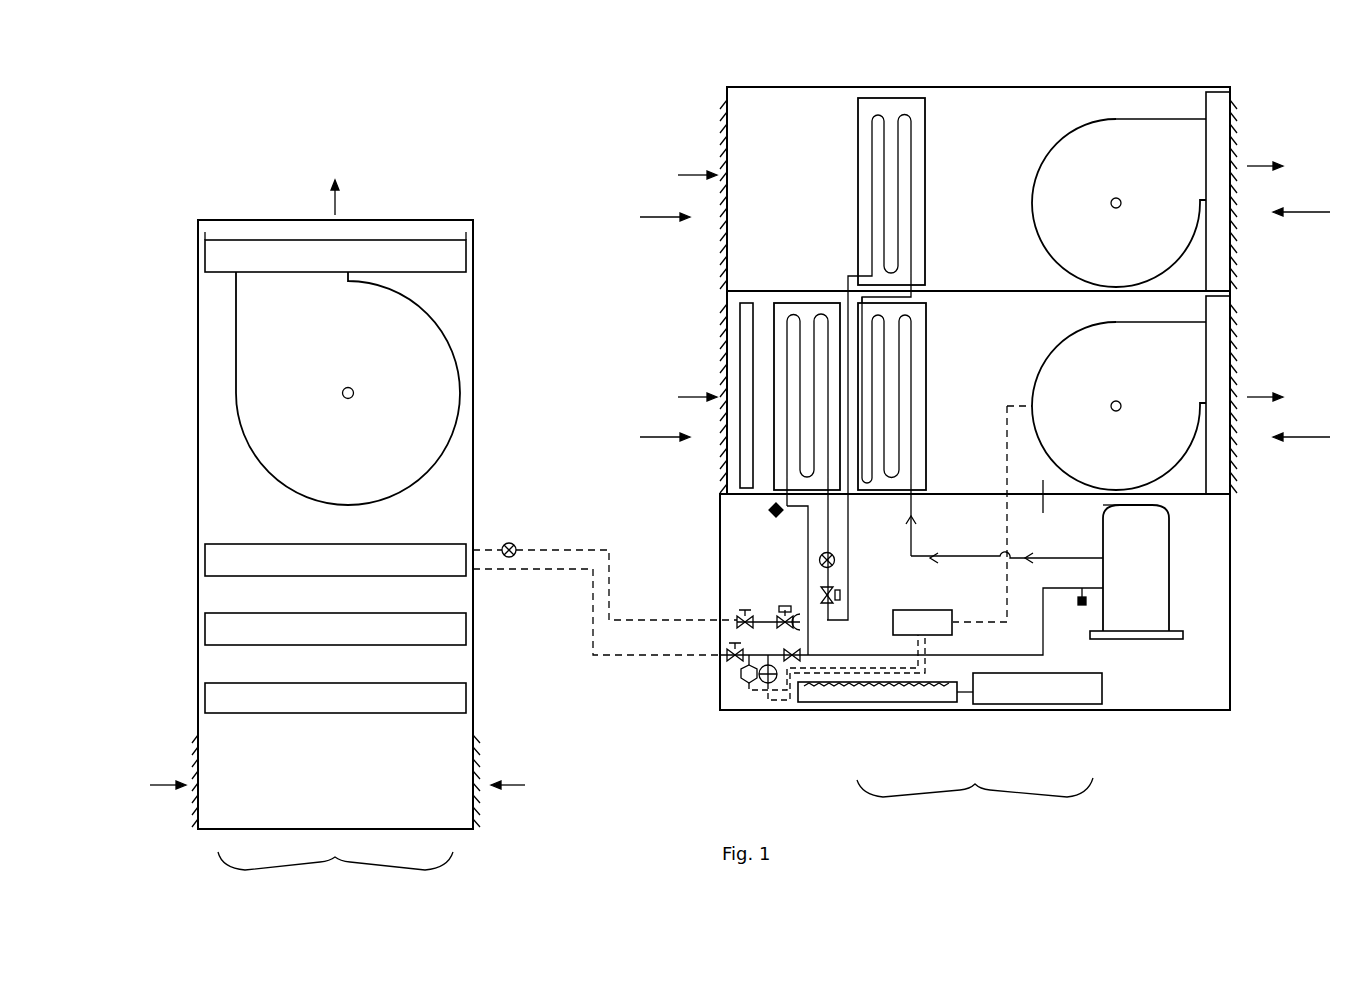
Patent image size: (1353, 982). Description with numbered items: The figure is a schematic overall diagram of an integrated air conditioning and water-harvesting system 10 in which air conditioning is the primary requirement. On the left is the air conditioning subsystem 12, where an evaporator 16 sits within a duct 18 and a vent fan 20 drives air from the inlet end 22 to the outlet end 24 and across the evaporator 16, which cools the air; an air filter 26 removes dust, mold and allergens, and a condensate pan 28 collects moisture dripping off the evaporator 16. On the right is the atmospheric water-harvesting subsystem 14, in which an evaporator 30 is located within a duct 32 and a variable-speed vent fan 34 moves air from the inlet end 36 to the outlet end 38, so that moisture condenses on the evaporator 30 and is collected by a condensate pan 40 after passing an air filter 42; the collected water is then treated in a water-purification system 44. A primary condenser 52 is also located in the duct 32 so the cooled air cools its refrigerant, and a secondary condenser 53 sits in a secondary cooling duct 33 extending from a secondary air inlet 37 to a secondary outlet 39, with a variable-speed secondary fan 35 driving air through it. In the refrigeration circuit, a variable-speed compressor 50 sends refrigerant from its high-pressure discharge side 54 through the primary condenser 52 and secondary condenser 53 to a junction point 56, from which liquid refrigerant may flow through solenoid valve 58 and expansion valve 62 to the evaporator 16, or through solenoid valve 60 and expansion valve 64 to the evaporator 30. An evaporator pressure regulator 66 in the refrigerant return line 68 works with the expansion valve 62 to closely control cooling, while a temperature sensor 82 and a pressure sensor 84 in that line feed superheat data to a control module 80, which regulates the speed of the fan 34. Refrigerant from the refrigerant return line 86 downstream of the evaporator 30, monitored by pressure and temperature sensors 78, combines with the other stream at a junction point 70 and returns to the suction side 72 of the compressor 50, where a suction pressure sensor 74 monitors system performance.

The integrated air conditioning and water-harvesting system 10 is at (509, 89).
The air conditioning subsystem 12 is at (335, 873).
The atmospheric water-harvesting subsystem 14 is at (975, 799).
The evaporator 16 is at (205, 560).
The duct 18 is at (473, 455).
The vent fan 20 is at (453, 355).
The inlet end 22 is at (346, 822).
The outlet end 24 is at (431, 176).
The air filter 26 is at (473, 698).
The condensate pan 28 is at (473, 629).
The evaporator 30 is at (774, 312).
The duct 32 is at (998, 514).
The secondary cooling duct 33 is at (985, 88).
The vent fan 34 is at (1195, 355).
The secondary fan 35 is at (1195, 150).
The inlet end 36 is at (666, 420).
The secondary air inlet 37 is at (666, 199).
The outlet end 38 is at (1298, 420).
The secondary outlet 39 is at (1298, 192).
The condensate pan 40 is at (857, 702).
The air filter 42 is at (745, 330).
The water-purification system 44 is at (1070, 704).
The variable-speed compressor 50 is at (1169, 552).
The primary condenser 52 is at (926, 368).
The secondary condenser 53 is at (927, 163).
The high-pressure discharge side 54 is at (1103, 533).
The junction point 56 is at (830, 624).
The solenoid valve 58 is at (783, 612).
The solenoid valve 60 is at (821, 595).
The expansion valve 62 is at (515, 543).
The expansion valve 64 is at (820, 557).
The evaporator pressure regulator 66 is at (790, 663).
The refrigerant return line 68 is at (617, 657).
The junction point 70 is at (808, 655).
The suction side 72 is at (1103, 573).
The suction pressure sensor 74 is at (1079, 608).
The pressure and temperature sensors 78 is at (770, 506).
The control module 80 is at (905, 610).
The temperature sensor 82 is at (741, 673).
The pressure sensor 84 is at (750, 682).
The refrigerant return line 86 is at (808, 543).